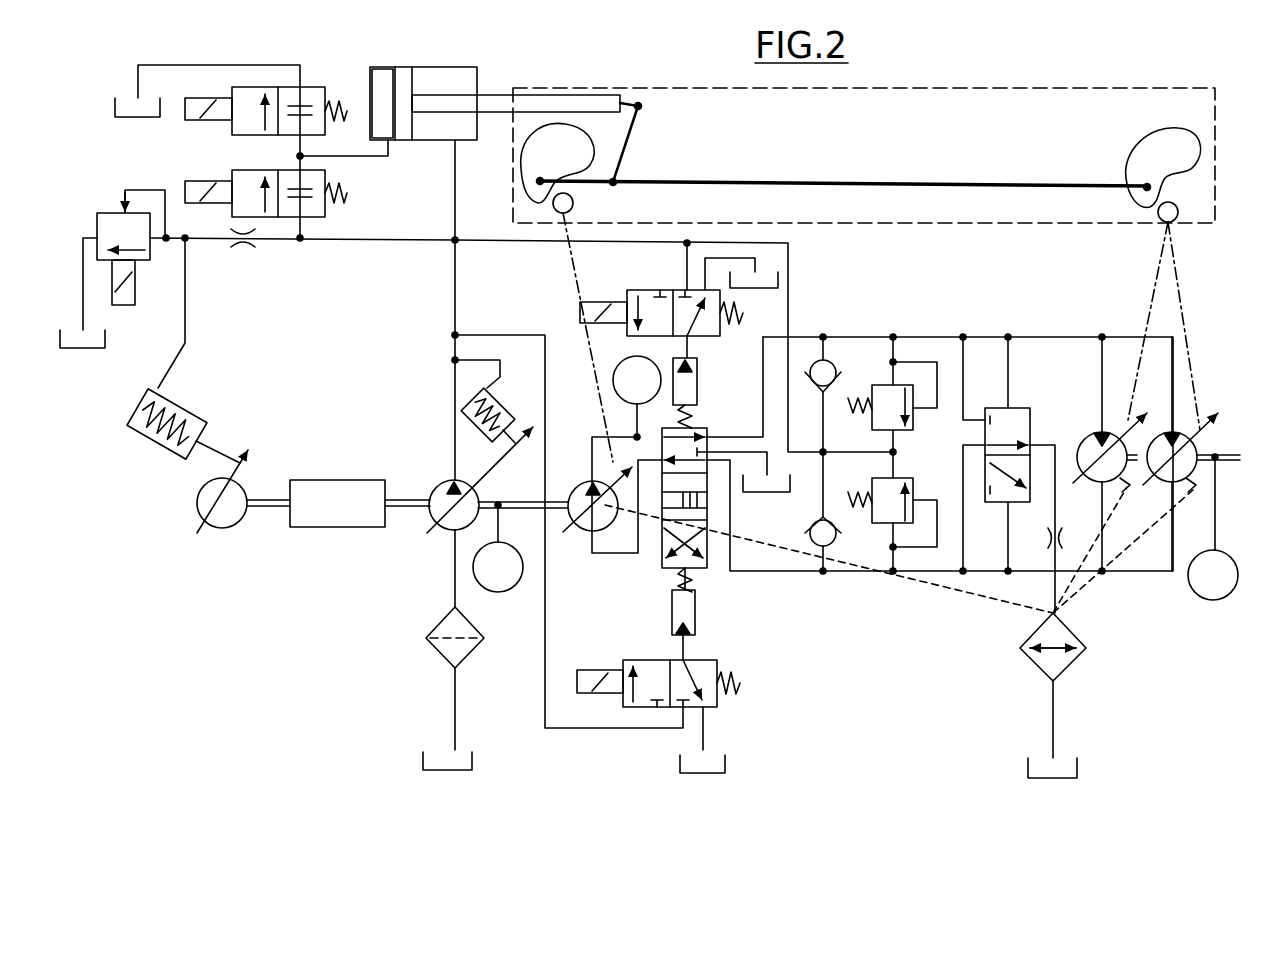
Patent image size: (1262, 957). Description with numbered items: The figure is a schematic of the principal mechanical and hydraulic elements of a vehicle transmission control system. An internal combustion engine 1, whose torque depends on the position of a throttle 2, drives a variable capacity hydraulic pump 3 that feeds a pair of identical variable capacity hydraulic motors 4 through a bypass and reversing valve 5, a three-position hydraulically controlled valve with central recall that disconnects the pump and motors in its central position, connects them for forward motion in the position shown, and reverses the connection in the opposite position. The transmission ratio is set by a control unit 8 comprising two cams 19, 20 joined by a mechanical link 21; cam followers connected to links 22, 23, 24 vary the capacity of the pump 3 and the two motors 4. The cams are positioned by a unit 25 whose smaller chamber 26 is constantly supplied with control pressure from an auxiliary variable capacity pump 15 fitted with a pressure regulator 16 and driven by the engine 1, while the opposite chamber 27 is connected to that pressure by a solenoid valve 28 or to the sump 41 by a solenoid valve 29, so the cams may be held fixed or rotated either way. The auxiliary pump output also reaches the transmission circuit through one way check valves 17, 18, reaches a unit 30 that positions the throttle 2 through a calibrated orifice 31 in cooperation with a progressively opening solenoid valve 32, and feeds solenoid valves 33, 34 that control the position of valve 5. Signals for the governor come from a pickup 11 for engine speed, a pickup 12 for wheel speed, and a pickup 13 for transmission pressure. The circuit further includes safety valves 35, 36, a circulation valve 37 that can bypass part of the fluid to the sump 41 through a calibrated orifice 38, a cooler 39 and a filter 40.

The internal combustion engine 1 is at (320, 500).
The throttle 2 is at (224, 517).
The variable capacity hydraulic pump 3 is at (590, 522).
The variable capacity hydraulic motors 4 is at (1086, 447).
The bypass and reversing valve 5 is at (660, 570).
The control unit 8 is at (1025, 120).
The pickup 11 is at (501, 573).
The pickup 12 is at (1216, 582).
The pickup 13 is at (630, 383).
The auxiliary variable capacity pump 15 is at (437, 500).
The pressure regulator 16 is at (496, 410).
The one way check valve 17 is at (806, 377).
The one way check valve 18 is at (814, 528).
The cam 19 is at (548, 155).
The cam 20 is at (1163, 153).
The mechanical link 21 is at (826, 182).
The link 22 is at (573, 267).
The link 23 is at (1153, 287).
The link 24 is at (1182, 297).
The unit 25 is at (418, 67).
The chamber 26 is at (447, 82).
The chamber 27 is at (383, 93).
The solenoid valve 28 is at (312, 206).
The solenoid valve 29 is at (312, 96).
The unit for regulating the throttle position 30 is at (184, 411).
The calibrated orifice 31 is at (243, 247).
The solenoid valve 32 is at (133, 268).
The solenoid valve 33 is at (704, 668).
The solenoid valve 34 is at (704, 328).
The safety valve 35 is at (910, 420).
The safety valve 36 is at (913, 490).
The circulation valve 37 is at (1016, 420).
The calibrated orifice 38 is at (1037, 538).
The cooler 39 is at (1070, 627).
The filter 40 is at (440, 652).
The sump 41 is at (115, 101).